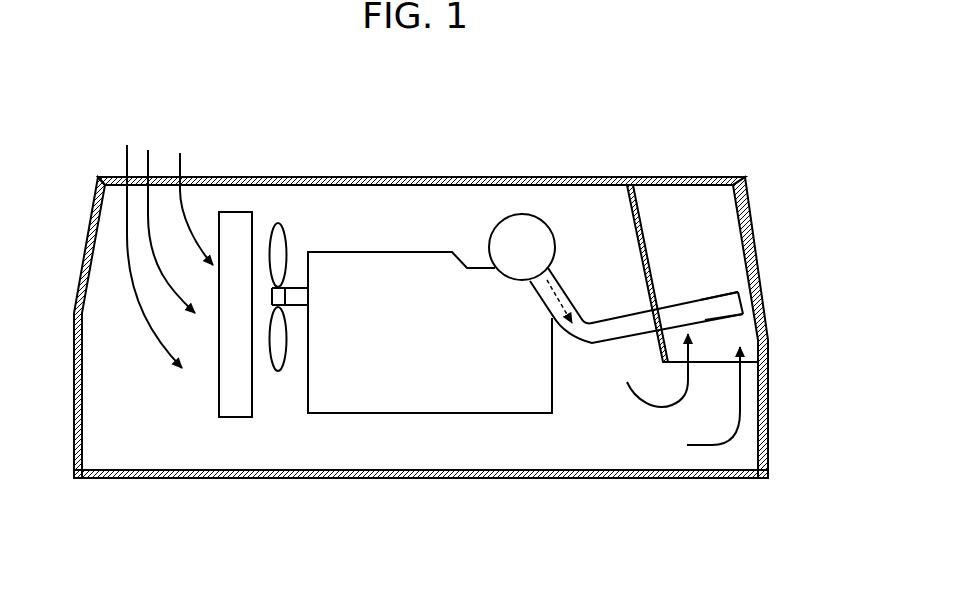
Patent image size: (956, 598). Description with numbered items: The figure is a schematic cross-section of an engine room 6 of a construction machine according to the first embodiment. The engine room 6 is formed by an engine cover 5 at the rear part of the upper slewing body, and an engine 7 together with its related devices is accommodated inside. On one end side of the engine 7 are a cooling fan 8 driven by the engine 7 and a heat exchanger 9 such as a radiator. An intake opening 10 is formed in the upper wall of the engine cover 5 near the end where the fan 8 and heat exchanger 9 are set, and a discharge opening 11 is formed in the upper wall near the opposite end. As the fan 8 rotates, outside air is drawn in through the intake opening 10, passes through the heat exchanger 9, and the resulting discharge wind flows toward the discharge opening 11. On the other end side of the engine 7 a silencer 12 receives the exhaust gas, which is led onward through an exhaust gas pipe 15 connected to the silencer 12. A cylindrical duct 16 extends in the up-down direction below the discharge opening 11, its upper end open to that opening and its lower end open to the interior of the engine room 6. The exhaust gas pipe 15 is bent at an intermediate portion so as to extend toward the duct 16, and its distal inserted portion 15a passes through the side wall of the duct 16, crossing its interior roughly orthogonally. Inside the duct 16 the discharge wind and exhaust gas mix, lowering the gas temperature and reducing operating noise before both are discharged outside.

The engine cover 5 is at (425, 177).
The engine room 6 is at (445, 462).
The engine 7 is at (378, 252).
The cooling fan 8 is at (276, 223).
The heat exchanger 9 is at (230, 212).
The intake opening 10 is at (170, 177).
The discharge opening 11 is at (695, 177).
The silencer 12 is at (527, 213).
The exhaust gas pipe 15 is at (596, 345).
The inserted portion 15a is at (703, 299).
The duct 16 is at (636, 228).